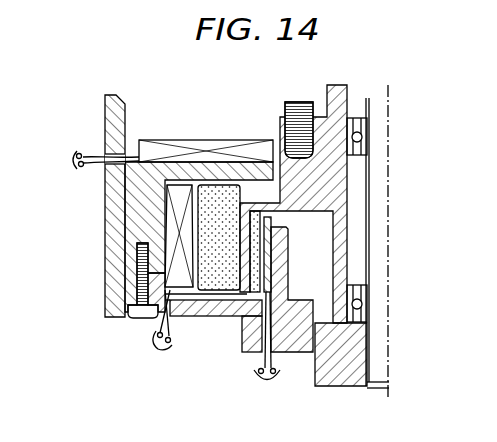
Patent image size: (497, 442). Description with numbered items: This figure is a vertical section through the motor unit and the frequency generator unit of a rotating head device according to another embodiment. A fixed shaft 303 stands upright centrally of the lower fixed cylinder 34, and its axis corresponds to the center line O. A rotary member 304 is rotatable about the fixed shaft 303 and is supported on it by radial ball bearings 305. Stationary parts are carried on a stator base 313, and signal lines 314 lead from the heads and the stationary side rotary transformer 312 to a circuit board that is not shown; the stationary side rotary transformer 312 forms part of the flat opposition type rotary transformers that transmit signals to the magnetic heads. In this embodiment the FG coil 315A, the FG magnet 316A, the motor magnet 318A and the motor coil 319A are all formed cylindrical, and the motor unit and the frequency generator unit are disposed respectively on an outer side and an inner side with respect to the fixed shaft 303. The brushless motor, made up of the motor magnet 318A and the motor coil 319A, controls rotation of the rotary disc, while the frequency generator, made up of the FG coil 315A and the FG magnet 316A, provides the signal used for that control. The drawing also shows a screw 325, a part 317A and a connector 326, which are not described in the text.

The stationary side rotary transformer 312 is at (246, 148).
The stator base 313 is at (135, 202).
The signal lines 314 is at (72, 160).
The motor coil 319A is at (179, 195).
The screw 325 is at (160, 342).
The base plate 317A is at (208, 316).
The motor magnet 318A is at (178, 318).
The FG magnet 316A is at (242, 310).
The FG coil 315A is at (262, 348).
The connector 326 is at (278, 382).
The rotary member 304 is at (340, 104).
The radial ball bearings 305 is at (366, 297).
The lower fixed cylinder 34 is at (352, 378).
The fixed shaft 303 is at (378, 330).
The center line O is at (389, 357).